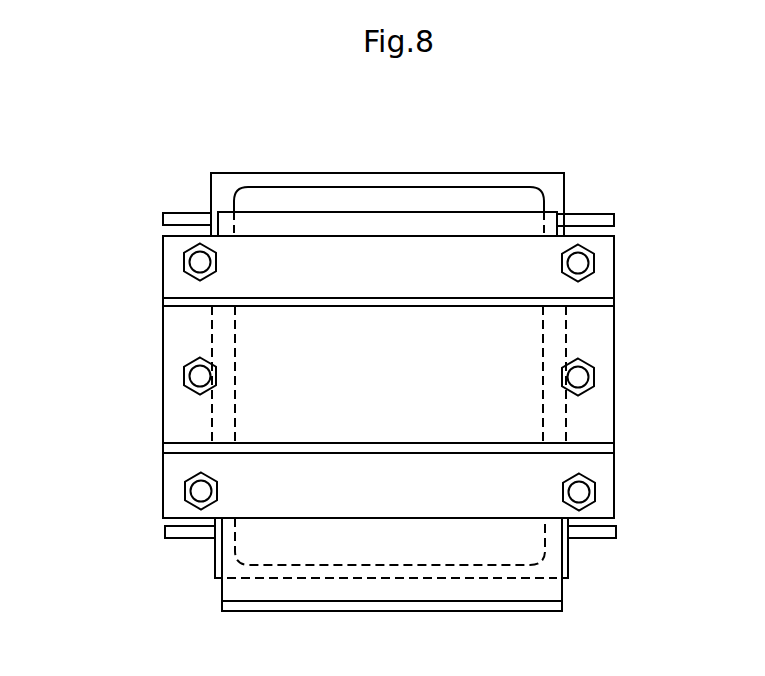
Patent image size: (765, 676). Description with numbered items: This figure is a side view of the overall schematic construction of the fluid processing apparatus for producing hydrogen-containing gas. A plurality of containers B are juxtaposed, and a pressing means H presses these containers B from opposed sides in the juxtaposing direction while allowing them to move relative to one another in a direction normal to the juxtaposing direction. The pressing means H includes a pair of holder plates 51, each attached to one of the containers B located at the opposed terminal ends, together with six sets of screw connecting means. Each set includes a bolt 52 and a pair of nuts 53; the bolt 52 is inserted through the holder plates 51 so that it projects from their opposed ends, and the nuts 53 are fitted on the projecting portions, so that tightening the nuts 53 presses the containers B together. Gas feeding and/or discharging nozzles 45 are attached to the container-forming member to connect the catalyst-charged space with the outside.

The pressing means H is at (102, 203).
The container B is at (375, 197).
The gas feeding and/or discharging nozzle 45 is at (182, 218).
The holder plate 51 is at (505, 351).
The bolt 52 is at (200, 262).
The nut 53 is at (184, 264).